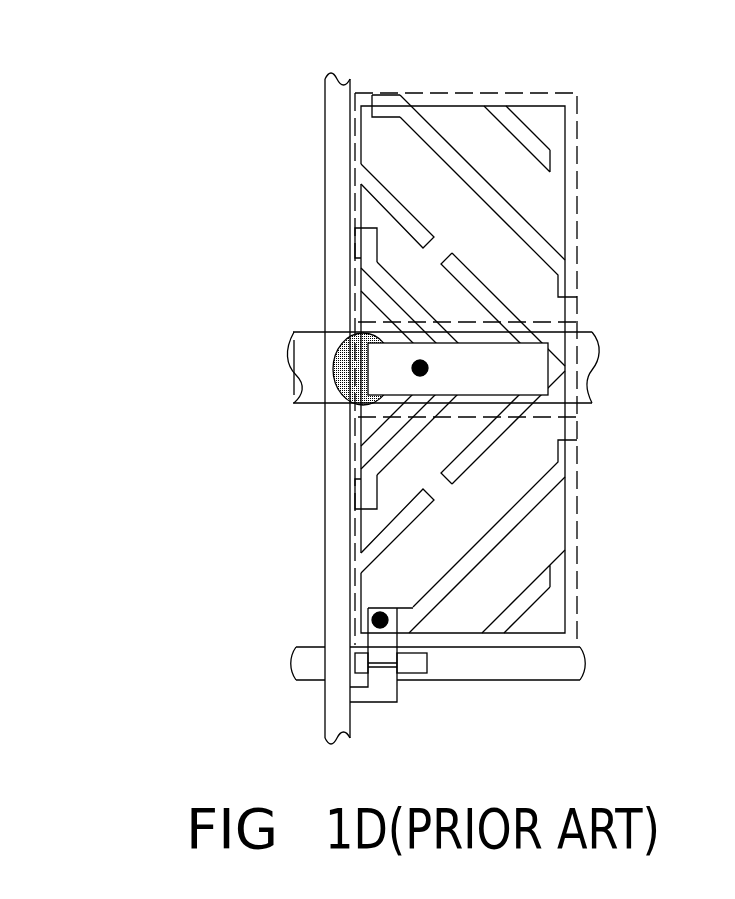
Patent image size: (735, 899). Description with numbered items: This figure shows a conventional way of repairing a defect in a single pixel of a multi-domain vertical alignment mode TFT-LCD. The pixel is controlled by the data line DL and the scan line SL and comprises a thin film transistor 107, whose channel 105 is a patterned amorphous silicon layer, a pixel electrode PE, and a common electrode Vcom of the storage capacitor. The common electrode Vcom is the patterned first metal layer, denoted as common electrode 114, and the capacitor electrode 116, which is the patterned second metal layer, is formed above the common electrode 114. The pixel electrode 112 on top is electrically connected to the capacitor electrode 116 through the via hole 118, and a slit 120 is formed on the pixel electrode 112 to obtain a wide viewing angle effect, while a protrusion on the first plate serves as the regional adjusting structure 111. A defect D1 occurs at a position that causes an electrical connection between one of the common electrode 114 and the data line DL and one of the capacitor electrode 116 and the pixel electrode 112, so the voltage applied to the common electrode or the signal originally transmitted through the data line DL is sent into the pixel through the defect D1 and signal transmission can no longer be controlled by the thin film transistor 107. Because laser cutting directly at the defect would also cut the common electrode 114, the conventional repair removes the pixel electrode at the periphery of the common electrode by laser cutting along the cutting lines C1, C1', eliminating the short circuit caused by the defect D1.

The data line DL is at (340, 76).
The scan line SL is at (294, 664).
The pixel electrode 112 is at (558, 118).
The common electrode 114 is at (592, 388).
The common electrode Vcom is at (286, 370).
The pixel electrode PE is at (357, 215).
The slit 120 is at (496, 105).
The regional adjusting structure 111 is at (573, 280).
The cutting line C1' is at (596, 301).
The cutting line C1 is at (592, 437).
The defect D1 is at (337, 360).
The capacitor electrode 116 is at (510, 358).
The via hole 118 is at (418, 360).
The thin film transistor 107 is at (402, 667).
The channel 105 is at (424, 664).